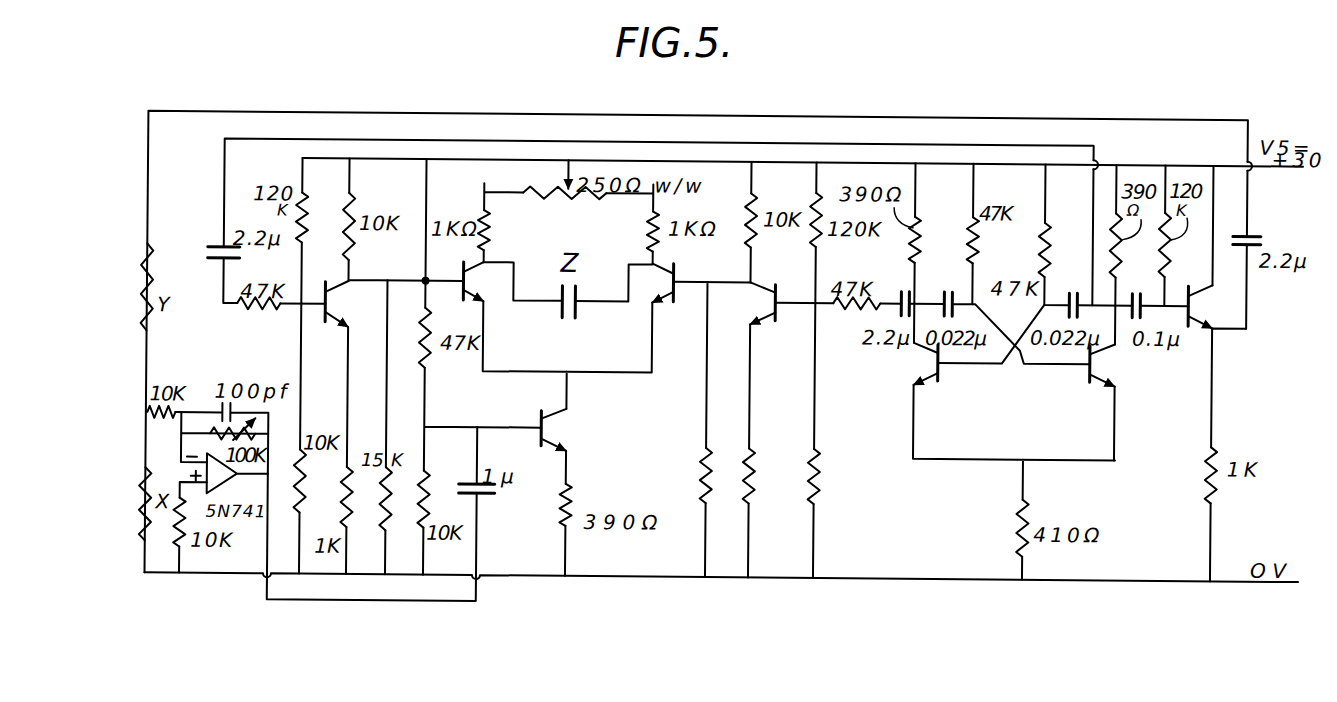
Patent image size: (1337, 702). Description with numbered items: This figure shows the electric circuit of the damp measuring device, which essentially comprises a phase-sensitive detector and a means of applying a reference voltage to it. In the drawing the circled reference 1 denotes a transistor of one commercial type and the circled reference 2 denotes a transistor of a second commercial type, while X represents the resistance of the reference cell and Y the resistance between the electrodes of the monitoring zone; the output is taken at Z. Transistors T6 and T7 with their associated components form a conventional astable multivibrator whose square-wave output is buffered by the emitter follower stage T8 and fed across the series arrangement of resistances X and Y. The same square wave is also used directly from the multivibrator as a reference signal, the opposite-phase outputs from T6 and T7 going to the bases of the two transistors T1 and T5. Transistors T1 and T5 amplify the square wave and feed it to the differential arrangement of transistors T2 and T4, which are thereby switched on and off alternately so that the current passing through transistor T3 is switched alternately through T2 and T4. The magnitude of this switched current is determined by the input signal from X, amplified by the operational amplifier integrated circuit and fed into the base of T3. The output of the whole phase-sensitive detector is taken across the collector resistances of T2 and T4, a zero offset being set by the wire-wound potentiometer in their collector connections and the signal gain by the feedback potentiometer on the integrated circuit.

The BFY 51 transistor 1 is at (836, 347).
The BC 107 transistor 2 is at (726, 346).
The transistor T1 is at (330, 317).
The transistor T2 is at (462, 270).
The transistor T3 is at (536, 422).
The transistor T4 is at (674, 271).
The transistor T5 is at (767, 318).
The transistor T6 is at (930, 377).
The transistor T7 is at (1094, 377).
The emitter follower stage T8 is at (1195, 290).